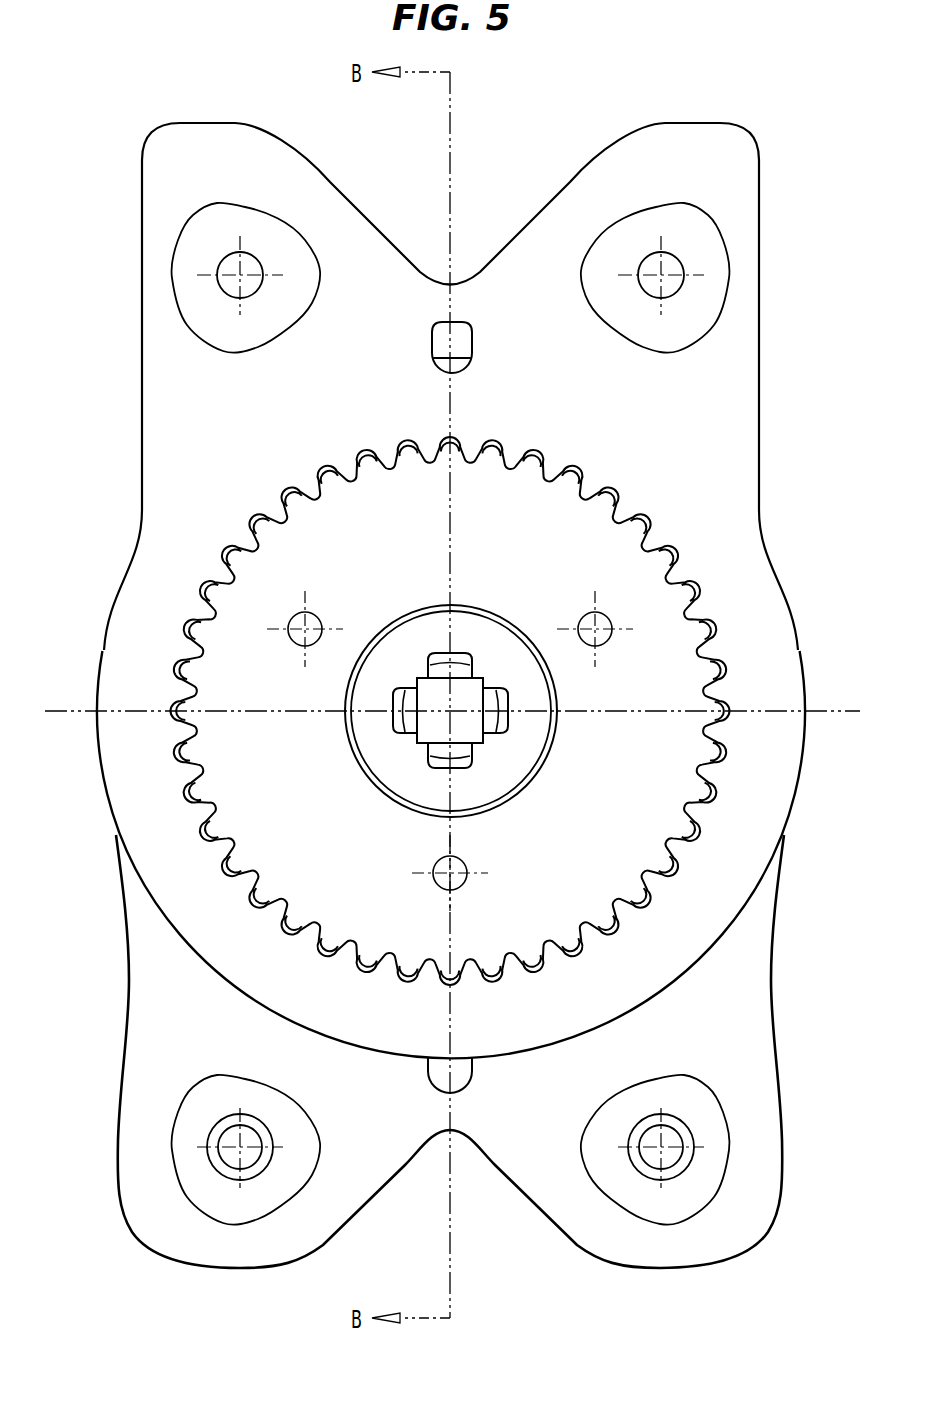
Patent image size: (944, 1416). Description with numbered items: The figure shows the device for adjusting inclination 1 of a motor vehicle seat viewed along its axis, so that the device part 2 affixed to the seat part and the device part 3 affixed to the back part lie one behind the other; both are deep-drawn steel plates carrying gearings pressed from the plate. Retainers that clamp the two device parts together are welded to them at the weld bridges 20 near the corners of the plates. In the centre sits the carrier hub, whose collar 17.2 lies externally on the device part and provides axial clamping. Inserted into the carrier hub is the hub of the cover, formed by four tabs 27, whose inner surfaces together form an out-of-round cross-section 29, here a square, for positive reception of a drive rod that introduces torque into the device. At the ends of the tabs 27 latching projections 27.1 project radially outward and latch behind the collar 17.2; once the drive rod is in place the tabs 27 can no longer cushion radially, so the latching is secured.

The device for adjusting inclination 1 is at (757, 107).
The device part 2 is at (768, 1000).
The device part 3 is at (745, 353).
The weld bridges 20 is at (205, 205).
The collar 17.2 is at (533, 733).
The tabs 27 is at (440, 672).
The latching projections 27.1 is at (459, 652).
The out-of-round cross-section 29 is at (425, 737).